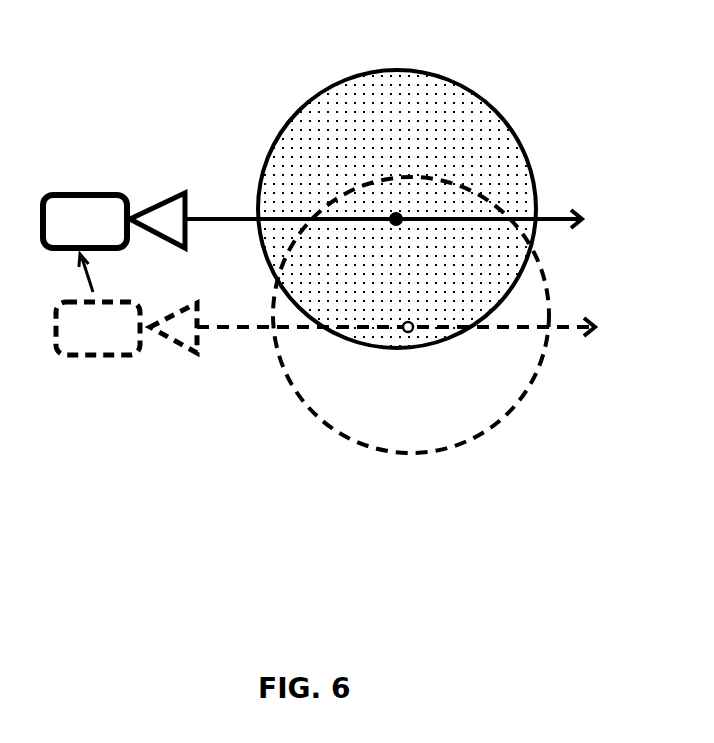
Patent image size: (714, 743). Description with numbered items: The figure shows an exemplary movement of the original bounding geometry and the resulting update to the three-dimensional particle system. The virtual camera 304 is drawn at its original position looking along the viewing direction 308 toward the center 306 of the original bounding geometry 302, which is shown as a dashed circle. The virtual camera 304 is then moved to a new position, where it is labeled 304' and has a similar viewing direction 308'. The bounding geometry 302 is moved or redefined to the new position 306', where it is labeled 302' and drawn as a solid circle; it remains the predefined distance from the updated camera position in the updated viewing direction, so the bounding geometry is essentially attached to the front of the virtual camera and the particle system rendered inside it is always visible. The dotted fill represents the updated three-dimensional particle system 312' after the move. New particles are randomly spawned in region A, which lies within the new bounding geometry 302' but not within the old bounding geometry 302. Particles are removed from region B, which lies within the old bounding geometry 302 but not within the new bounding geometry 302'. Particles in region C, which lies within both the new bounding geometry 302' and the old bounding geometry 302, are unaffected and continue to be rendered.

The bounding geometry 302 is at (392, 315).
The new bounding geometry 302' is at (414, 205).
The virtual camera 304 is at (113, 347).
The virtual camera at new position 304' is at (114, 227).
The center point of field of view 306 is at (364, 411).
The new position 306' is at (355, 124).
The optical axis 308 is at (422, 313).
The viewing direction 308' is at (413, 206).
The updated 3D particle system 312' is at (248, 123).
The region A is at (427, 98).
The region B is at (489, 398).
The region C is at (314, 272).